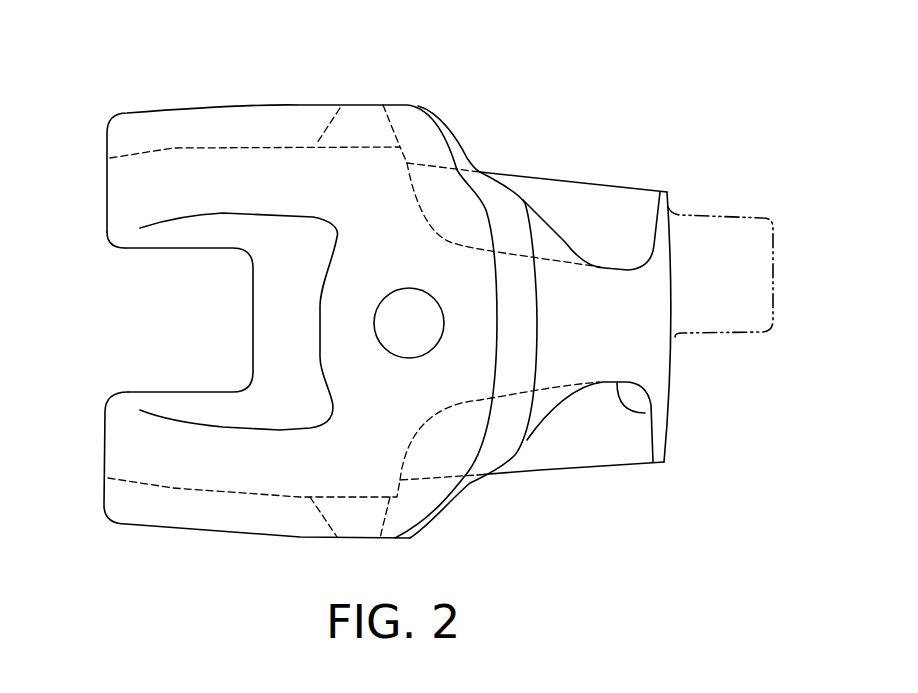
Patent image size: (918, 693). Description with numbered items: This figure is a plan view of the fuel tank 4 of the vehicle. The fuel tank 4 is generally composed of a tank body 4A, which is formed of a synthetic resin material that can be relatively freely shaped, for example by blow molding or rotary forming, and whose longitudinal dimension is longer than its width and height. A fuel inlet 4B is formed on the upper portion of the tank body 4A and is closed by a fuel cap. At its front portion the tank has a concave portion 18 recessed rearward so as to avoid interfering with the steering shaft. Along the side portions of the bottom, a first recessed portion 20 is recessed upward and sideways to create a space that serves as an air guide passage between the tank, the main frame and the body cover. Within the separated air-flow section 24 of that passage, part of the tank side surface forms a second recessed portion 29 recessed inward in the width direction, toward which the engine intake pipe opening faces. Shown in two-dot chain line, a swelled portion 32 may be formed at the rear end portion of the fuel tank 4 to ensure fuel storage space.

The fuel tank 4 is at (565, 162).
The tank body 4A is at (247, 120).
The fuel inlet 4B is at (410, 287).
The concave portion 18 is at (173, 249).
The first recessed portion 20 is at (170, 147).
The separated air-flow section 24 is at (613, 422).
The second recessed portion 29 is at (645, 413).
The swelled portion 32 is at (760, 333).